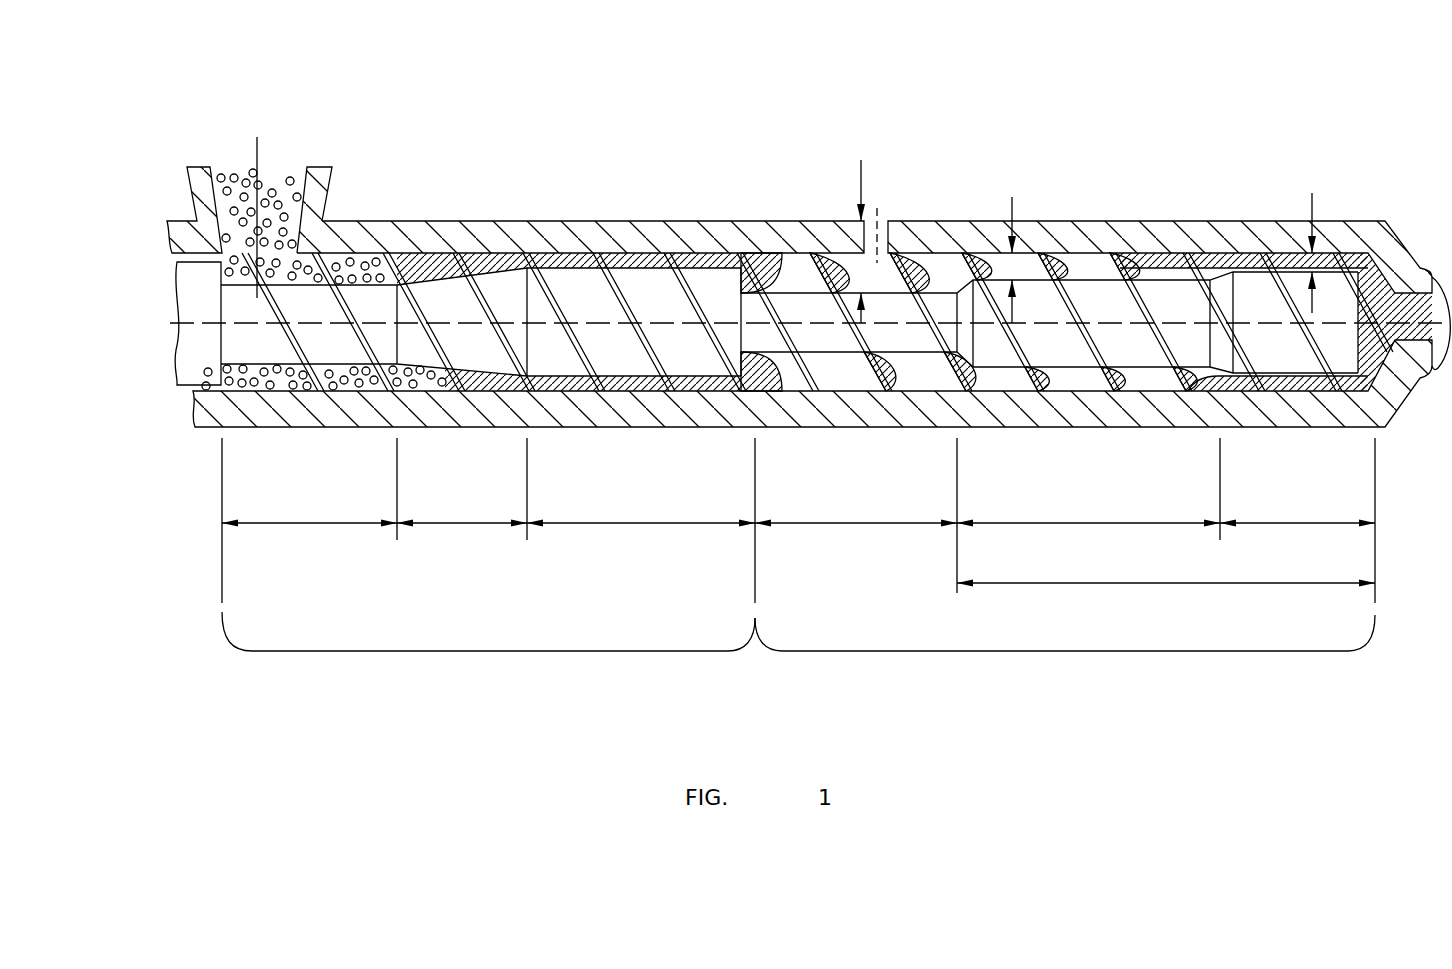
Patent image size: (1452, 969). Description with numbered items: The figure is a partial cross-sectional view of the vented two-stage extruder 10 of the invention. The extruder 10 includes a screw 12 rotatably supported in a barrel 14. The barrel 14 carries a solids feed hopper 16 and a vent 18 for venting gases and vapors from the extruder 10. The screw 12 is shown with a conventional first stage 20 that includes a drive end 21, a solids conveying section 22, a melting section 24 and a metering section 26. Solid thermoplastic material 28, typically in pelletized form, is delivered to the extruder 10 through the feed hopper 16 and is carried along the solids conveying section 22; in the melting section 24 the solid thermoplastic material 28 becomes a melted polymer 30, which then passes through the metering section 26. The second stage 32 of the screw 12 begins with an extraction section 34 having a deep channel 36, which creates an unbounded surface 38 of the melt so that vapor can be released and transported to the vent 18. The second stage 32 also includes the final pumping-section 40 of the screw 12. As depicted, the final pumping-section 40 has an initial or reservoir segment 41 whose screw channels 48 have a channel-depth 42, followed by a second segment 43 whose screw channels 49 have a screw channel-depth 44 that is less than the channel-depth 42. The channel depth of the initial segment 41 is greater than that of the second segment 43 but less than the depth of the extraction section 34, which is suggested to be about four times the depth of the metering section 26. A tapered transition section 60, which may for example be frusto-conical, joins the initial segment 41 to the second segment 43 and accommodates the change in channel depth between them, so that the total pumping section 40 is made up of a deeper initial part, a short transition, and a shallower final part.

The vented two-stage extruder 10 is at (1034, 106).
The screw 12 is at (553, 275).
The barrel 14 is at (405, 223).
The solids feed hopper 16 is at (323, 165).
The vent 18 is at (882, 213).
The first stage 20 is at (490, 652).
The drive end 21 is at (177, 288).
The solids conveying section 22 is at (310, 523).
The melting section 24 is at (452, 523).
The metering section 26 is at (625, 523).
The solid thermoplastic material 28 is at (232, 177).
The melted polymer 30 is at (487, 240).
The second stage 32 is at (1065, 652).
The extraction section 34 is at (832, 523).
The deep channel 36 is at (858, 176).
The unbounded surface 38 is at (767, 265).
The final pumping-section 40 is at (1015, 583).
The initial or reservoir segment 41 is at (1087, 523).
The channel-depth 42 is at (1010, 195).
The second segment 43 is at (1292, 523).
The screw channel-depth 44 is at (1310, 192).
The screw channels 48 is at (1078, 260).
The screw channels 49 is at (1320, 257).
The tapered transition section 60 is at (1220, 338).